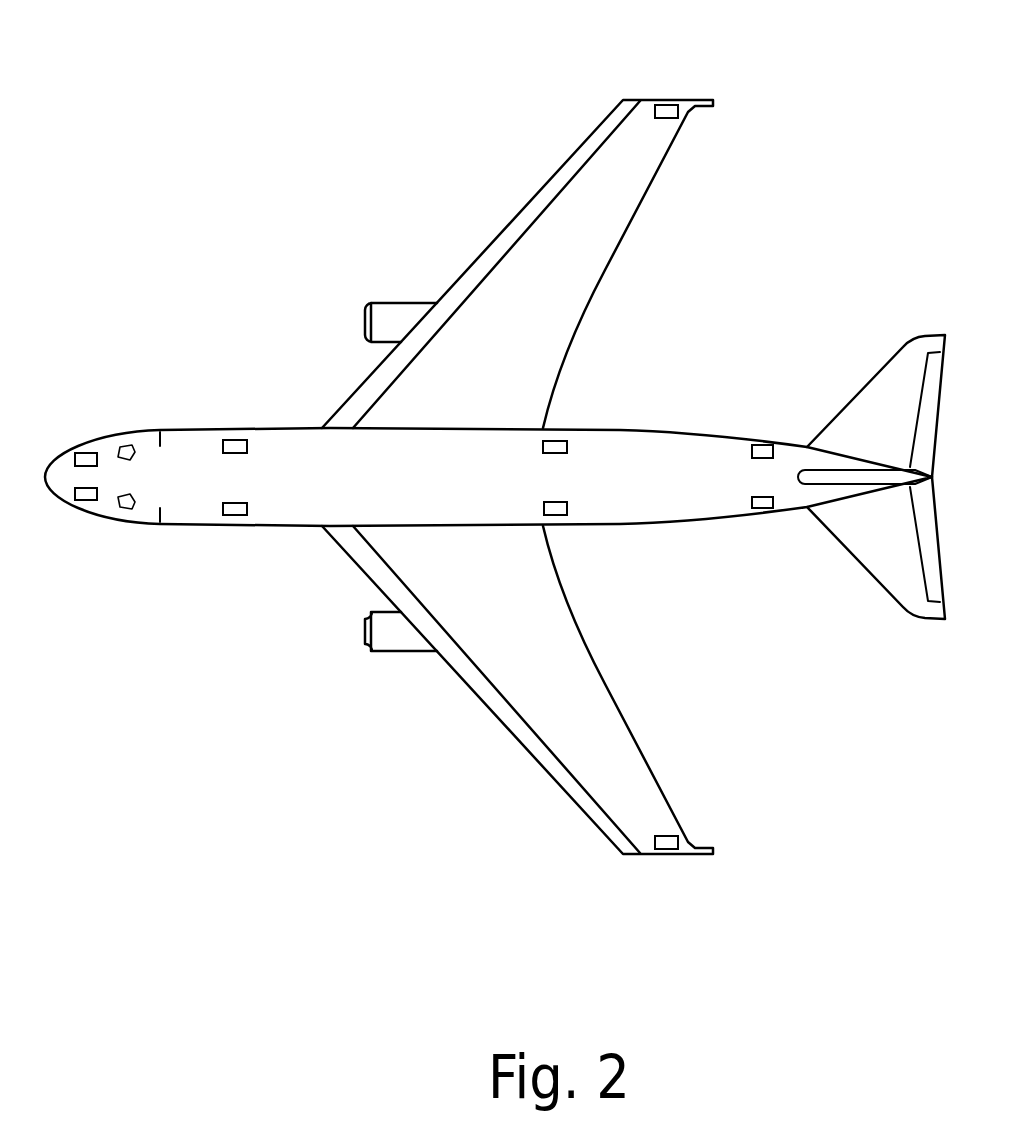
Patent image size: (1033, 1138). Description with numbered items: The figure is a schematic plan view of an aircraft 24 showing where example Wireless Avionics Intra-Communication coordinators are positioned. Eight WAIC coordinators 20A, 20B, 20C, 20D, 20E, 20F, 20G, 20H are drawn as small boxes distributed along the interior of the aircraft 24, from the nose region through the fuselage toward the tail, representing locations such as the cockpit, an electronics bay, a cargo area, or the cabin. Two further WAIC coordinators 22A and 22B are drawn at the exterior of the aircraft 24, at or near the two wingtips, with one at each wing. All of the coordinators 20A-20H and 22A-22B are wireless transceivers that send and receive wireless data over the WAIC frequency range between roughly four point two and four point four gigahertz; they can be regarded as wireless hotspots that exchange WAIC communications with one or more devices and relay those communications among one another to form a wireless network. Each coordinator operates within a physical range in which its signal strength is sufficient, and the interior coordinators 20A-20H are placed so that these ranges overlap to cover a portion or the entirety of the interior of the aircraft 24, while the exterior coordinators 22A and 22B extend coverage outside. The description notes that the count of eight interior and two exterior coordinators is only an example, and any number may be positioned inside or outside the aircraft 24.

The WAIC coordinator 20A is at (83, 455).
The WAIC coordinator 20B is at (233, 447).
The WAIC coordinator 20C is at (556, 444).
The WAIC coordinator 20D is at (762, 452).
The WAIC coordinator 20E is at (760, 505).
The WAIC coordinator 20F is at (556, 512).
The WAIC coordinator 20G is at (235, 510).
The WAIC coordinator 20H is at (88, 497).
The WAIC coordinator 22A is at (667, 110).
The WAIC coordinator 22B is at (667, 842).
The aircraft 24 is at (522, 210).